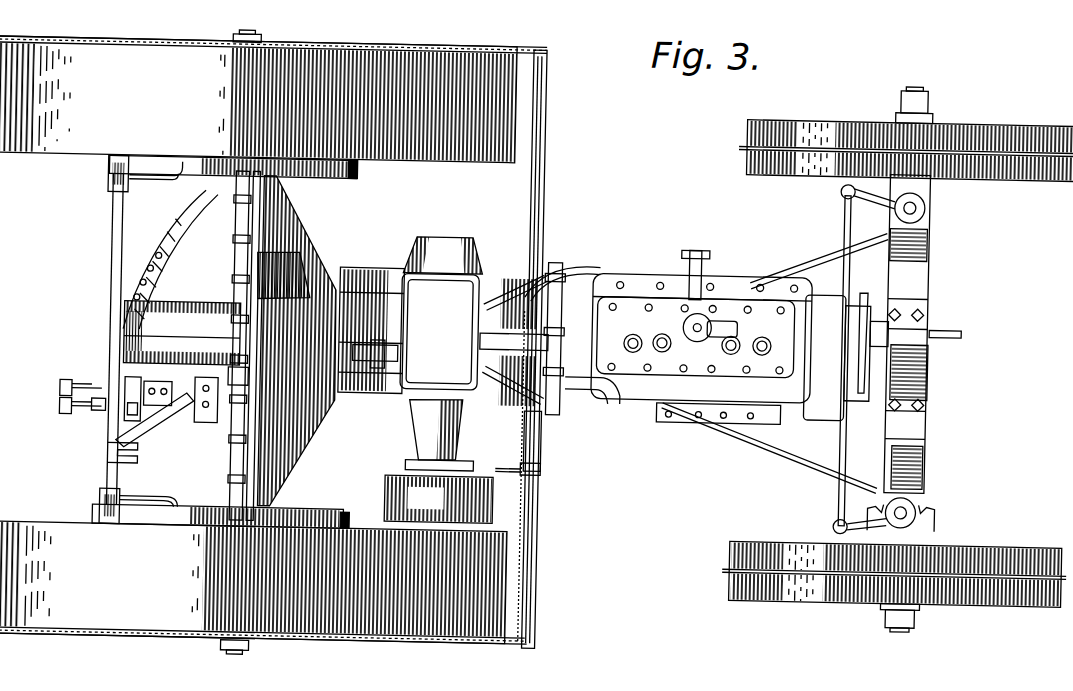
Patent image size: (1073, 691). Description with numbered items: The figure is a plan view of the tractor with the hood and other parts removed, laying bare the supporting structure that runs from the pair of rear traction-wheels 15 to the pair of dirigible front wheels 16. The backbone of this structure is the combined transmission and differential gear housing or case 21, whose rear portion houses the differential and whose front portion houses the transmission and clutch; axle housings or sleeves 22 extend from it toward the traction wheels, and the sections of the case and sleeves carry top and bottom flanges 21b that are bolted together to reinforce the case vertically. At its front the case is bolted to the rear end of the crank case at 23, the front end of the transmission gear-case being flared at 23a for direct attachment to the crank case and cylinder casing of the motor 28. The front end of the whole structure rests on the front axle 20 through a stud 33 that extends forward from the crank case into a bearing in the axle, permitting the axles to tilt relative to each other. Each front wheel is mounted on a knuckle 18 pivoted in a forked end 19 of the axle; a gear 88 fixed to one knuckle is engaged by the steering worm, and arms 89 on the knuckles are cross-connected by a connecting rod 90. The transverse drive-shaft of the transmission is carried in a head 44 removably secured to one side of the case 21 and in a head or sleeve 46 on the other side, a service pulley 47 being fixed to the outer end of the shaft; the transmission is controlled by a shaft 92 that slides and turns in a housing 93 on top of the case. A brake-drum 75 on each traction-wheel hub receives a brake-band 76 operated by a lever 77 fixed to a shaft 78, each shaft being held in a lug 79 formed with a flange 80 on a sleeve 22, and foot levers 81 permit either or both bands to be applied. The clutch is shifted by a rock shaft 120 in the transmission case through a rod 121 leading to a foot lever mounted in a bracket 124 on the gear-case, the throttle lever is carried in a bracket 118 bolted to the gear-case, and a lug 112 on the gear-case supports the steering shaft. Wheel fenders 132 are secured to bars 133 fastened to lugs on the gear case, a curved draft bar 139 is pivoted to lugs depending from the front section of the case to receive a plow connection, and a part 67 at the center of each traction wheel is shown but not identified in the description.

The rear traction-wheels 15 is at (273, 340).
The dirigible front wheels 16 is at (961, 110).
The knuckles 18 is at (930, 190).
The forked end 19 is at (918, 219).
The front axle 20 is at (935, 280).
The combined transmission and differential gear housing or case 21 is at (181, 333).
The flanges 21b is at (250, 373).
The axle housings or sleeves 22 is at (281, 203).
The bolted connection 23 is at (563, 257).
The flared front end of transmission gear-case 23a is at (505, 294).
The motor 28 is at (654, 287).
The stud 33 is at (936, 339).
The head 44 is at (422, 263).
The head or sleeve 46 is at (474, 414).
The service pulley 47 is at (438, 499).
The wheel hub cap 67 is at (249, 26).
The brake-drum 75 is at (342, 173).
The brake-band 76 is at (362, 168).
The levers 77 is at (112, 169).
The shafts 78 is at (117, 235).
The lug 79 is at (152, 179).
The flange 80 is at (114, 413).
The foot levers 81 is at (75, 391).
The gear 88 is at (942, 491).
The arms 89 is at (886, 183).
The connecting rod 90 is at (849, 478).
The shaft 92 is at (350, 390).
The housing 93 is at (439, 331).
The lug 112 is at (166, 428).
The bracket 118 is at (188, 297).
The rock shaft 120 is at (550, 431).
The rod 121 is at (512, 458).
The bracket 124 is at (125, 450).
The wheel fenders 132 is at (364, 34).
The bars 133 is at (549, 147).
The curved bar 139 is at (136, 275).